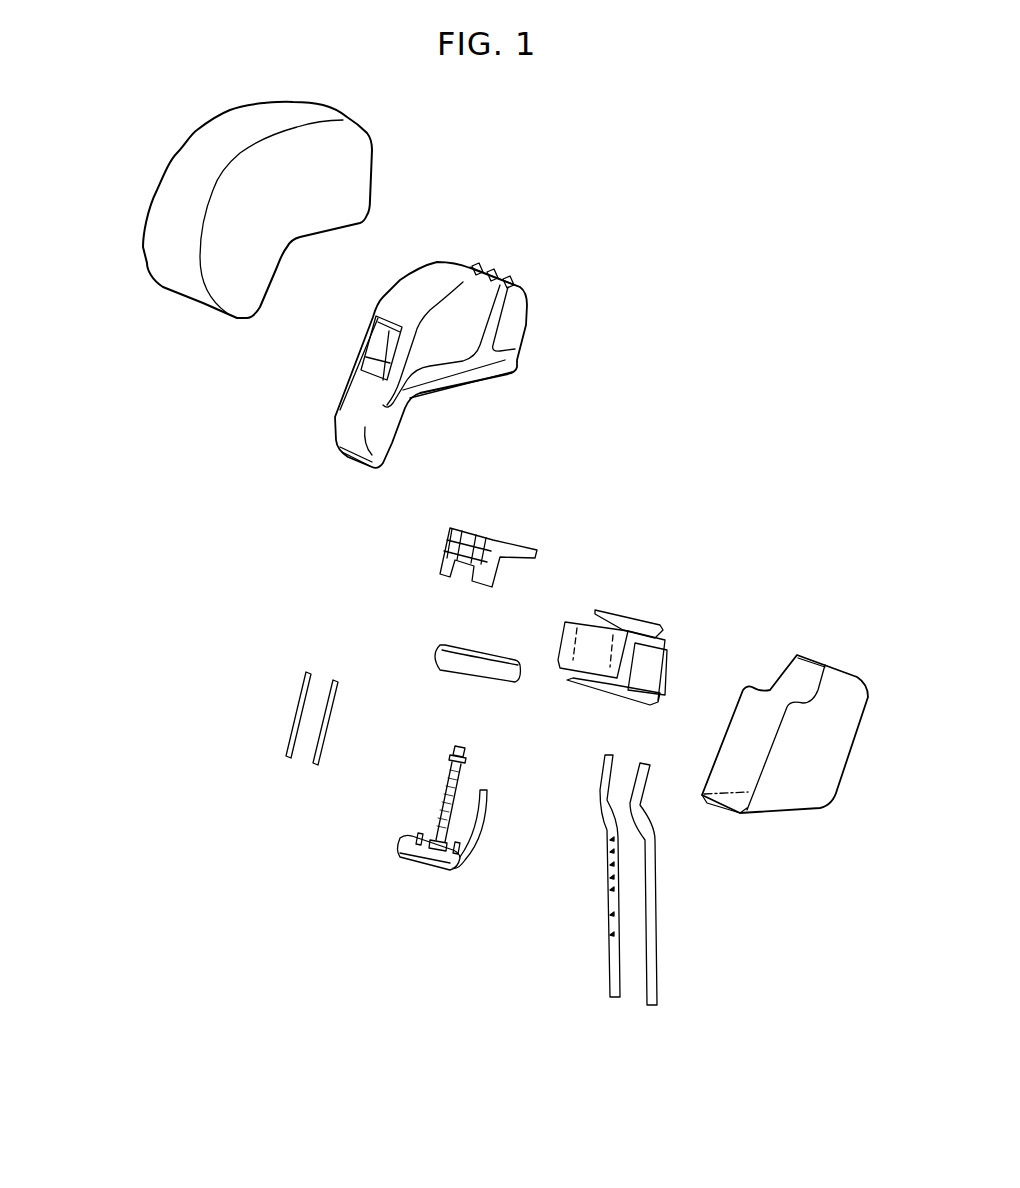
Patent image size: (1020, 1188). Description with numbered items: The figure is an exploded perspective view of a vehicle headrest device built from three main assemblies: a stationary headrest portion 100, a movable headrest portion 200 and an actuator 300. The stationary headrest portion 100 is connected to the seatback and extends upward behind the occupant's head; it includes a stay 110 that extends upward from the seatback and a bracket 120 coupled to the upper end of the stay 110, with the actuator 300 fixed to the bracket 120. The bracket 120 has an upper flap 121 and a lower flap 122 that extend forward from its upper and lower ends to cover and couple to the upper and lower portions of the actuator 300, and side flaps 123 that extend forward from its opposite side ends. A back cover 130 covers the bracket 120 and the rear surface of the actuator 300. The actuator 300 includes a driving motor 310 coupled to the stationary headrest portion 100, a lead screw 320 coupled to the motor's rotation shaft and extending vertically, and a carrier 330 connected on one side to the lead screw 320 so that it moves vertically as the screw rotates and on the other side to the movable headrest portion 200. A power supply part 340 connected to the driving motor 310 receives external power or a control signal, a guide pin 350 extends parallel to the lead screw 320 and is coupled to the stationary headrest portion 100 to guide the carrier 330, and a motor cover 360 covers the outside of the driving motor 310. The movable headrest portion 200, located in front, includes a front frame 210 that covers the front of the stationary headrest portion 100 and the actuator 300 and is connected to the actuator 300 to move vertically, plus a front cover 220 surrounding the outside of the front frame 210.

The stationary headrest portion 100 is at (785, 840).
The stay 110 is at (652, 940).
The bracket 120 is at (640, 622).
The upper flap 121 is at (617, 612).
The lower flap 122 is at (600, 698).
The side flaps 123 is at (653, 657).
The back cover 130 is at (843, 690).
The movable headrest portion 200 is at (223, 482).
The front frame 210 is at (352, 415).
The front cover 220 is at (177, 270).
The actuator 300 is at (337, 868).
The driving motor 310 is at (417, 863).
The lead screw 320 is at (445, 795).
The carrier 330 is at (478, 530).
The power supply part 340 is at (470, 836).
The guide pin 350 is at (298, 716).
The motor cover 360 is at (437, 648).